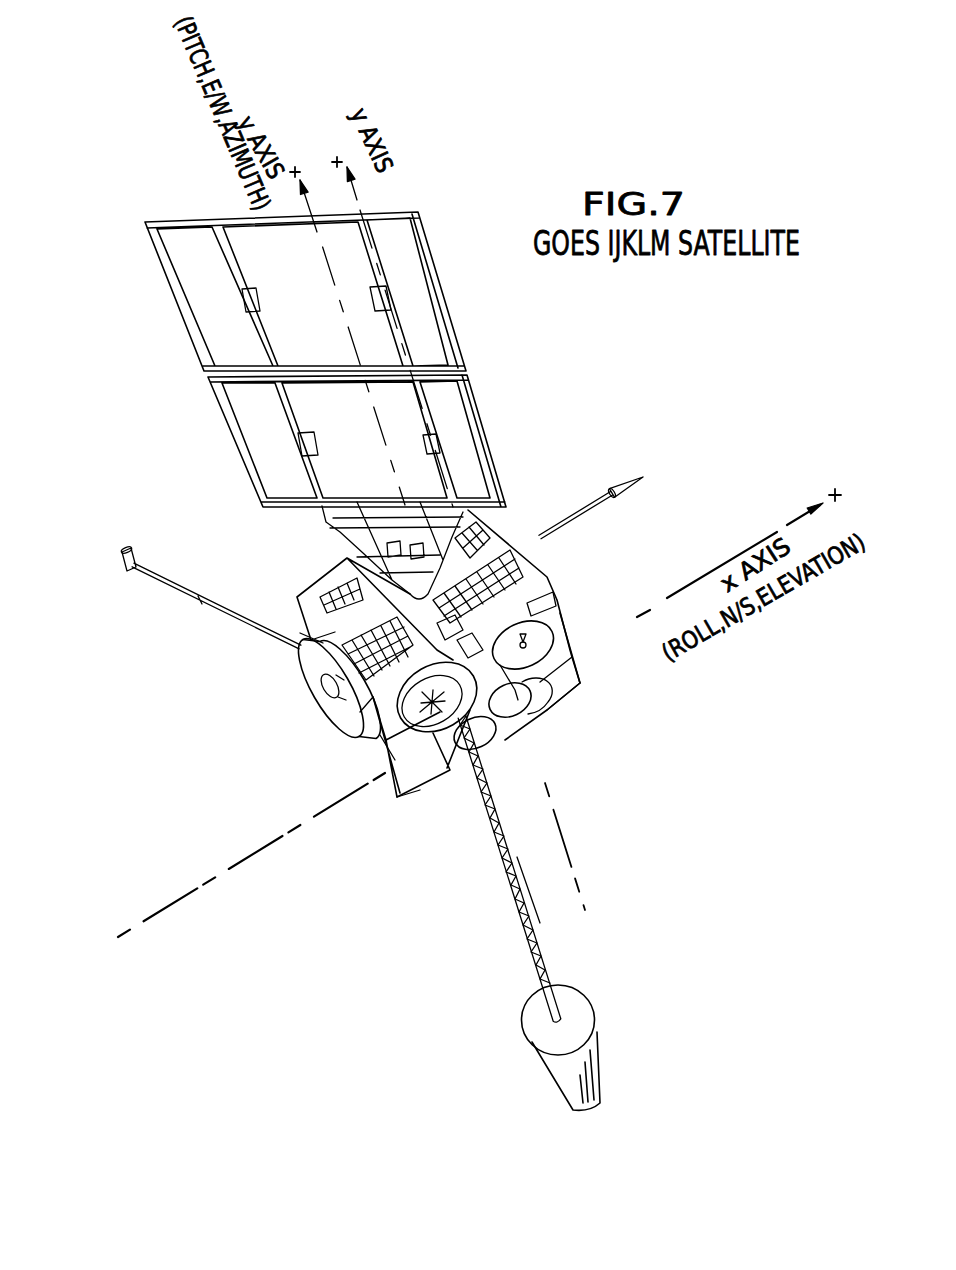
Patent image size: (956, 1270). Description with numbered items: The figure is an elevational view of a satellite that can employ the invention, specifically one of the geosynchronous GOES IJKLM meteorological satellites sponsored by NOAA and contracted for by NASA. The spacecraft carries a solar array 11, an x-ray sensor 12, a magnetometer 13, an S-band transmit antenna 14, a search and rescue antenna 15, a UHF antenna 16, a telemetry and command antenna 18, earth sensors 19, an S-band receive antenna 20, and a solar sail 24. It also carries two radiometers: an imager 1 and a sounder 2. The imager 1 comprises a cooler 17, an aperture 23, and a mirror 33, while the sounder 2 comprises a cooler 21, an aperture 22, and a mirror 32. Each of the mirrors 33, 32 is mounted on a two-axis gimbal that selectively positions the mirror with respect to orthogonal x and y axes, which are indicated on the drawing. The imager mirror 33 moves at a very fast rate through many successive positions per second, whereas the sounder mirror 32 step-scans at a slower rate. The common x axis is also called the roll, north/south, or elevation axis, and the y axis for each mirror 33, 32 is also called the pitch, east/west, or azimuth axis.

The imager 1 is at (450, 745).
The sounder 2 is at (574, 656).
The solar array 11 is at (172, 294).
The x-ray sensor 12 is at (350, 551).
The magnetometer 13 is at (123, 563).
The S-band transmit antenna 14 is at (333, 566).
The search and rescue antenna 15 is at (380, 750).
The UHF antenna 16 is at (390, 783).
The cooler 17 is at (412, 800).
The telemetry and command antenna 18 is at (627, 495).
The earth sensors 19 is at (556, 599).
The S-band receive antenna 20 is at (550, 637).
The cooler 21 is at (583, 688).
The aperture 22 is at (530, 707).
The aperture 23 is at (505, 668).
The solar sail 24 is at (595, 1037).
The sounder mirror 32 is at (538, 702).
The imager mirror 33 is at (495, 745).